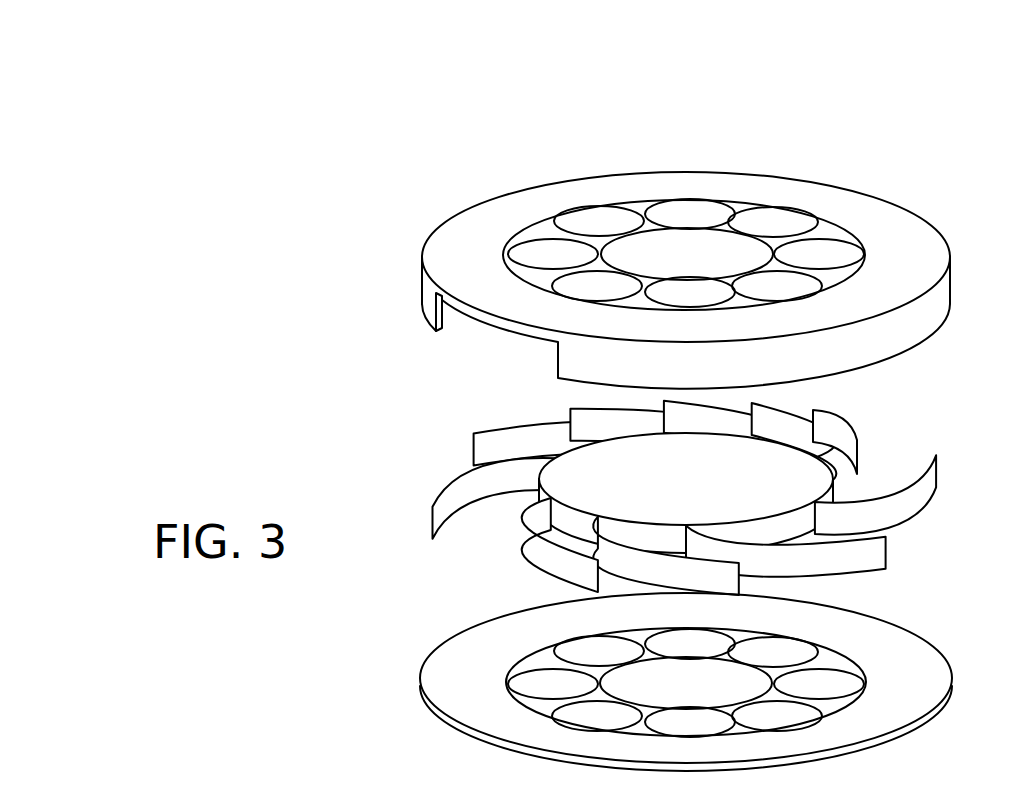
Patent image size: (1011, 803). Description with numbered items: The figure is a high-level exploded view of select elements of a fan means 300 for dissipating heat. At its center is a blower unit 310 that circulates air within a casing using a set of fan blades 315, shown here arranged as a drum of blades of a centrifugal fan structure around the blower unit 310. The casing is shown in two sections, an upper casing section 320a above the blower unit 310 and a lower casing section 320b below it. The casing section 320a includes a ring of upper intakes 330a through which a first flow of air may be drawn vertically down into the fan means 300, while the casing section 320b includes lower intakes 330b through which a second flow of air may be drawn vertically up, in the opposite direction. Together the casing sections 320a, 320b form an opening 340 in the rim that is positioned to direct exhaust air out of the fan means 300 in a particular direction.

The fan means 300 is at (340, 96).
The blower unit 310 is at (710, 494).
The fan blades 315 is at (864, 428).
The casing section 320a is at (725, 376).
The casing section 320b is at (500, 693).
The upper intakes 330a is at (675, 206).
The lower intakes 330b is at (830, 682).
The opening 340 is at (455, 338).